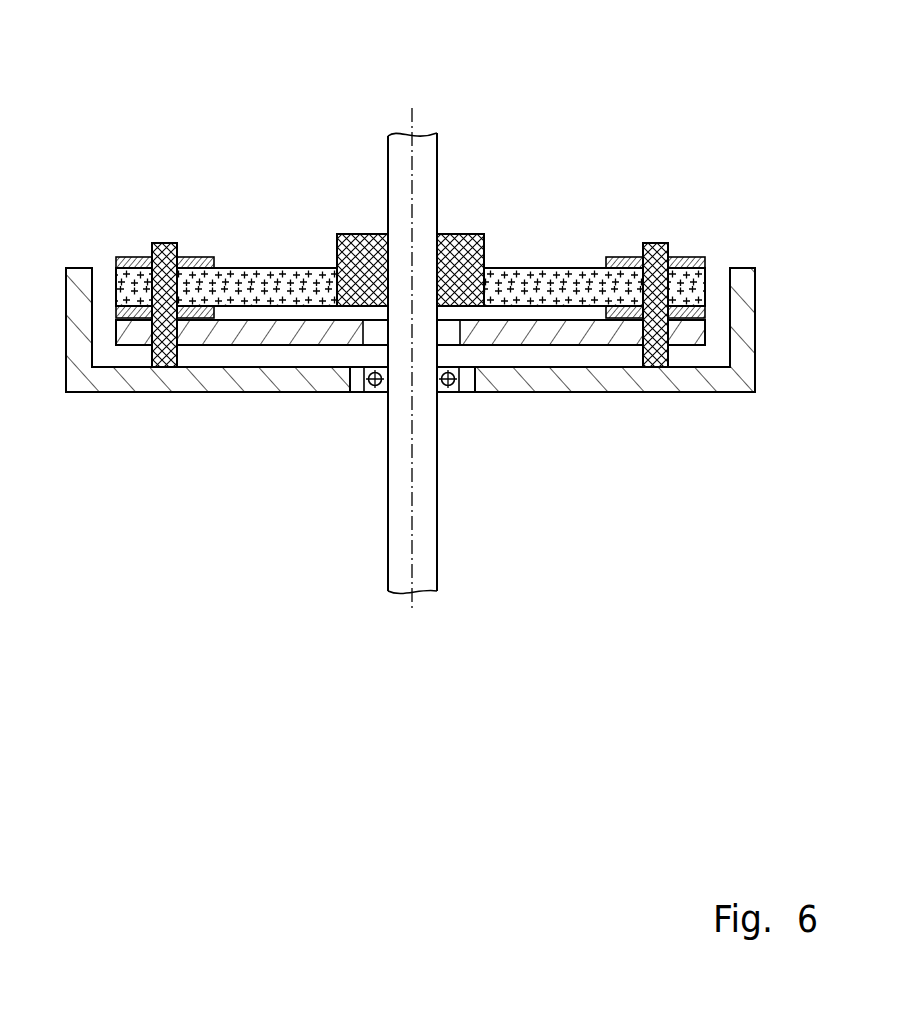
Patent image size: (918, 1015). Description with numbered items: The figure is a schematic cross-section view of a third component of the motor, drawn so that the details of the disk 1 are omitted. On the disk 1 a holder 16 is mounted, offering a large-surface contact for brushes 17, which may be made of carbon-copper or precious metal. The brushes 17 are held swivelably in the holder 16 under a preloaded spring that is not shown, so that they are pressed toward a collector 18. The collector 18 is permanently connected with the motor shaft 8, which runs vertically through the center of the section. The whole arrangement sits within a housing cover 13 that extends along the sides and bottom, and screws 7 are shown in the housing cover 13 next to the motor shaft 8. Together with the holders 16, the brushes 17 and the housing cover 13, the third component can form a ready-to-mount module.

The disk 1 is at (617, 333).
The screw 7 is at (453, 392).
The motor shaft 8 is at (419, 147).
The housing cover 13 is at (207, 380).
The holder 16 is at (611, 257).
The brushes 17 is at (529, 268).
The collector 18 is at (468, 236).